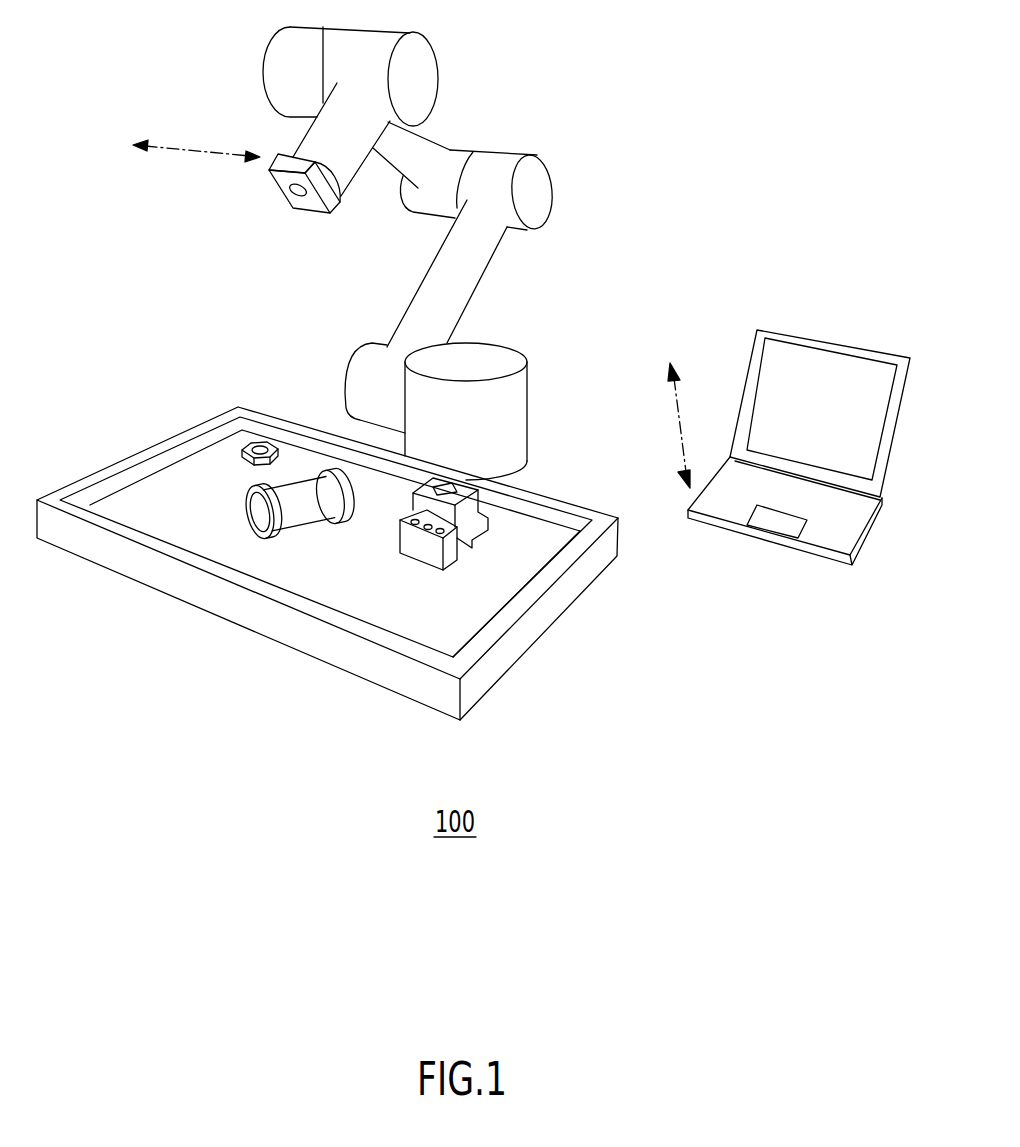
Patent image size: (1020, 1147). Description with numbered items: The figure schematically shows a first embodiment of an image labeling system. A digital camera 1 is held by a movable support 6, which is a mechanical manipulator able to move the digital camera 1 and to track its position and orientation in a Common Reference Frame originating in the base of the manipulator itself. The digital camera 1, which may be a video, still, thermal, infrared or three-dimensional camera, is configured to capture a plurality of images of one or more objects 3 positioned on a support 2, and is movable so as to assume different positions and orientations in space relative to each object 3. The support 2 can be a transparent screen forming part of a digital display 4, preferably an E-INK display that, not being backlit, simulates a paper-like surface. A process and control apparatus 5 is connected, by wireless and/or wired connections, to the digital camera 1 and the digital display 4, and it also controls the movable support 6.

The digital camera 1 is at (283, 183).
The support 2 is at (475, 590).
The object to be labeled 3 is at (250, 437).
The digital display 4 is at (110, 432).
The process and control apparatus 5 is at (807, 302).
The movable support 6 is at (473, 112).